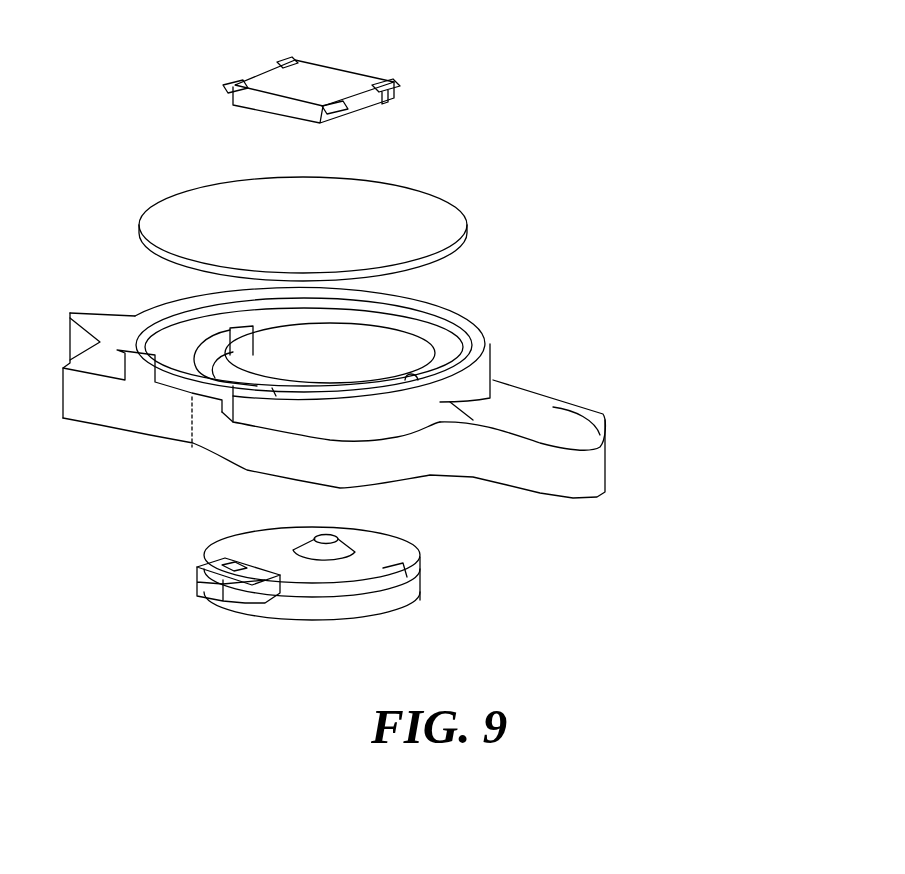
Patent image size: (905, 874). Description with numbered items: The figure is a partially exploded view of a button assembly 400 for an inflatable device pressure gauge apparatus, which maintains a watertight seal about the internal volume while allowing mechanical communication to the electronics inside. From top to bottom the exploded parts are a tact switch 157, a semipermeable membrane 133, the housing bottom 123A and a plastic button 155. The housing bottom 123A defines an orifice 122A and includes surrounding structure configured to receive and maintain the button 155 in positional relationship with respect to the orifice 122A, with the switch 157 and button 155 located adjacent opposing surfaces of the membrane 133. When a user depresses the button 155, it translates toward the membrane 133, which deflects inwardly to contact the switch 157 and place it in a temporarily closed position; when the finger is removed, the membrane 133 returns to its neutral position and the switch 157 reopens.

The tact switch 157 is at (416, 73).
The membrane 133 is at (450, 182).
The orifice 122A is at (367, 342).
The housing bottom 123A is at (374, 385).
The plastic button 155 is at (430, 578).
The button assembly 400 is at (700, 0).